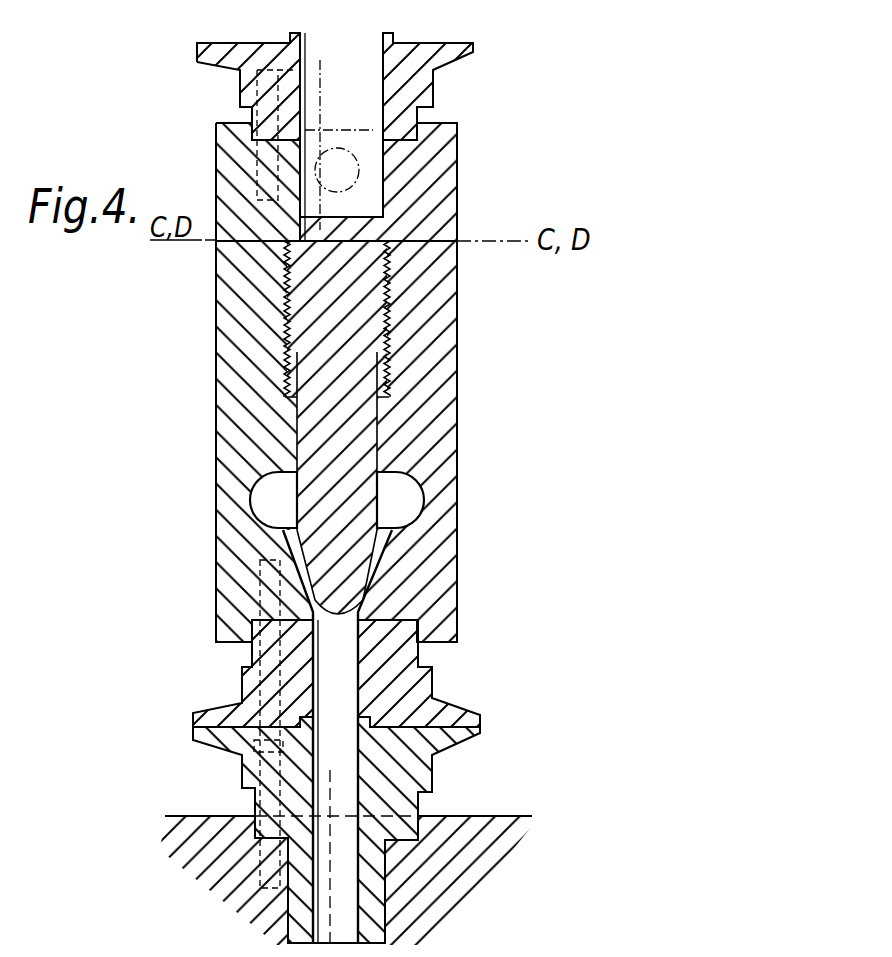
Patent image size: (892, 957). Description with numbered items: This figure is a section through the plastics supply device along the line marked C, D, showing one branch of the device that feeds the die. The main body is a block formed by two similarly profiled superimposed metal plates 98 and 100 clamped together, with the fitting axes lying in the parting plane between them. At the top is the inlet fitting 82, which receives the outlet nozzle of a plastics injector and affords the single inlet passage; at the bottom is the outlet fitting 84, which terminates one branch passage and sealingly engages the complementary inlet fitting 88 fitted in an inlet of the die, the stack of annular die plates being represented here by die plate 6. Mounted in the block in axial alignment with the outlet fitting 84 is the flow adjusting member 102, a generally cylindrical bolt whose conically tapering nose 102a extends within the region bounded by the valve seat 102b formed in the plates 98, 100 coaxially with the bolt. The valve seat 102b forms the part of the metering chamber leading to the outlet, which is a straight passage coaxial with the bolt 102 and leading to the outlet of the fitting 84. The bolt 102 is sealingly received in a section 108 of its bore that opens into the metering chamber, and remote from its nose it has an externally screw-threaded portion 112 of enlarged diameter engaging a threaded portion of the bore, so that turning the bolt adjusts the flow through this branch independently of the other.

The annular die plate 6 is at (490, 833).
The inlet fitting 82 is at (472, 52).
The outlet fitting 84 is at (425, 683).
The inlet fitting 88 is at (417, 775).
The metal plate 98 is at (222, 316).
The metal plate 100 is at (440, 338).
The flow adjusting member 102 is at (343, 133).
The conically tapering nose 102a is at (373, 556).
The valve seat 102b is at (368, 585).
The bore section 108 is at (370, 437).
The externally screw-threaded portion 112 is at (367, 303).